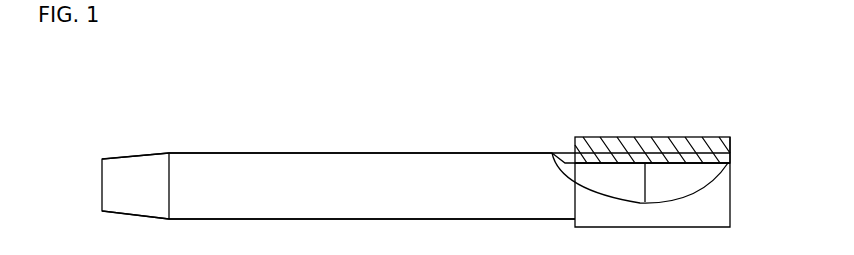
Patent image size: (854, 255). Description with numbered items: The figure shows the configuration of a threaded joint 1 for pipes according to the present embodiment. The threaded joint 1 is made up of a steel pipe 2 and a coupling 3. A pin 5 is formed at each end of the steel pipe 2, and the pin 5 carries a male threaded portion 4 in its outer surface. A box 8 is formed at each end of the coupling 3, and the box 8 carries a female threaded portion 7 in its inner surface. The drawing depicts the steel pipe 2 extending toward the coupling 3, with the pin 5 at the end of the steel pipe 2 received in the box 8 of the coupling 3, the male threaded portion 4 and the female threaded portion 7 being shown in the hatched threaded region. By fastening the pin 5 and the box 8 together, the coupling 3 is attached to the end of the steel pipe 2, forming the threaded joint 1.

The threaded joint 1 is at (418, 49).
The steel pipe 2 is at (384, 148).
The coupling 3 is at (655, 133).
The male threaded portion 4 is at (603, 152).
The pin 5 is at (142, 160).
The female threaded portion 7 is at (702, 152).
The box 8 is at (685, 162).